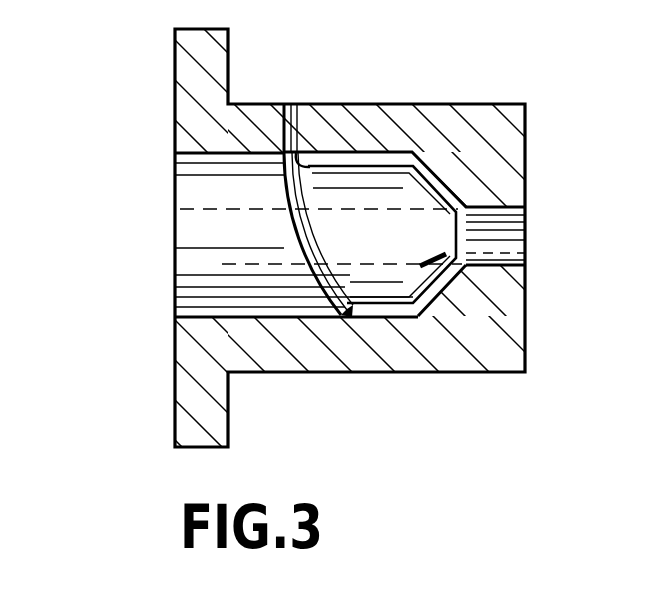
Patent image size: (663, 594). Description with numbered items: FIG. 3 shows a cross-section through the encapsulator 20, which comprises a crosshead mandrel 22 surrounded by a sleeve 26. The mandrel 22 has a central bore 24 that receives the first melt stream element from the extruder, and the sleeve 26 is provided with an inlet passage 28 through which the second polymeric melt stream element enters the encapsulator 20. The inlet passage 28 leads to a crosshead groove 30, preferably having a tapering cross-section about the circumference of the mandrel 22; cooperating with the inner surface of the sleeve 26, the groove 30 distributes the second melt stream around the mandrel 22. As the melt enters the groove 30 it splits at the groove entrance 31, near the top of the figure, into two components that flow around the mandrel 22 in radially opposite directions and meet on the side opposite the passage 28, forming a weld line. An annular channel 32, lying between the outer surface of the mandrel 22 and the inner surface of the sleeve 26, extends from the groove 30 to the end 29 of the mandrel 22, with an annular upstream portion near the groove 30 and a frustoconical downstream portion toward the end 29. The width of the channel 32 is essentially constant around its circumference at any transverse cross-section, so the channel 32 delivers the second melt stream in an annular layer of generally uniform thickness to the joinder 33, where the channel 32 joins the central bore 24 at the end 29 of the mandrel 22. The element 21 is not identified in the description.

The encapsulator 20 is at (156, 58).
The insert 21 is at (398, 150).
The crosshead mandrel 22 is at (197, 192).
The central bore 24 is at (202, 263).
The sleeve 26 is at (487, 103).
The inlet passage 28 is at (299, 152).
The end of mandrel 29 is at (466, 243).
The crosshead groove 30 is at (322, 288).
The groove entrance 31 is at (312, 150).
The annular channel 32 is at (478, 198).
The joinder 33 is at (466, 266).